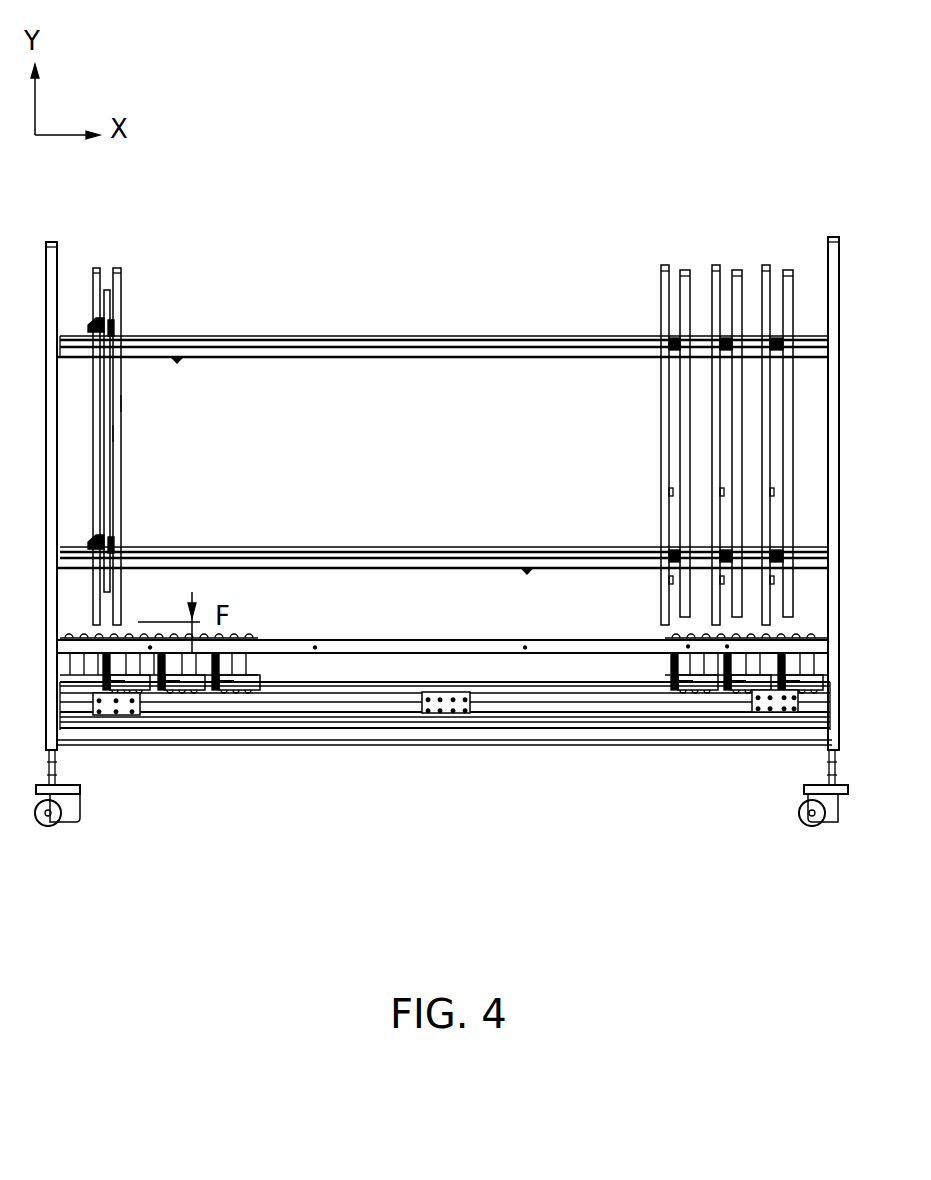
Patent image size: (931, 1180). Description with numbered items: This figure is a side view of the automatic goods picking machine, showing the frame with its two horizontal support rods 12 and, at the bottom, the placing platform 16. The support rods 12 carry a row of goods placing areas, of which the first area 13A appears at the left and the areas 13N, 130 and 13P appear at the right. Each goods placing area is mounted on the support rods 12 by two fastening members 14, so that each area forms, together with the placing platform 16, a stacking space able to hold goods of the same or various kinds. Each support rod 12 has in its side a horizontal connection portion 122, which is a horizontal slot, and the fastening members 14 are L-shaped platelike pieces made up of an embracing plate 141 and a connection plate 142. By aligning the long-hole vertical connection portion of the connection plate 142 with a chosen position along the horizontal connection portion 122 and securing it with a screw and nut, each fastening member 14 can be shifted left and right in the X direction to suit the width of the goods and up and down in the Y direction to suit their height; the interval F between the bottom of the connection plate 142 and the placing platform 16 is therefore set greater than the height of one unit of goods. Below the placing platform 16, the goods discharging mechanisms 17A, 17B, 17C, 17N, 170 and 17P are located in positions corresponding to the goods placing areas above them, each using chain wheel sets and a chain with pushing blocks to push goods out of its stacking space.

The support rod 12 is at (425, 340).
The horizontal connection portion 122 is at (488, 338).
The goods placing area 13A is at (105, 268).
The goods placing area 13N is at (684, 283).
The goods placing area 130 is at (722, 278).
The goods placing area 13P is at (775, 280).
The fastening member 14 is at (95, 275).
The embracing plate 141 is at (122, 433).
The connection plate 142 is at (122, 404).
The placing platform 16 is at (385, 639).
The goods discharging mechanism 17A is at (106, 693).
The goods discharging mechanism 17B is at (163, 690).
The goods discharging mechanism 17C is at (212, 690).
The goods discharging mechanism 17N is at (708, 678).
The goods discharging mechanism 170 is at (752, 672).
The goods discharging mechanism 17P is at (810, 680).